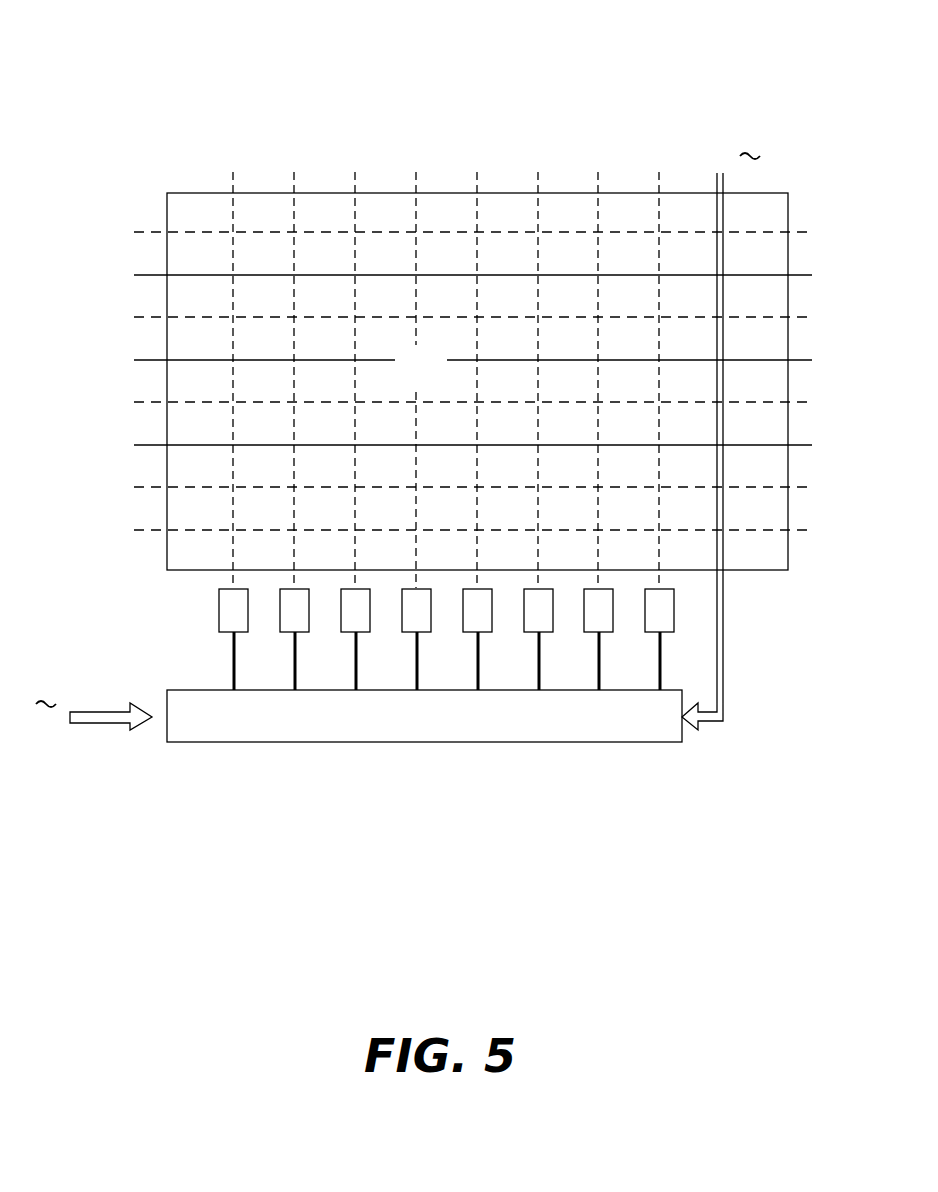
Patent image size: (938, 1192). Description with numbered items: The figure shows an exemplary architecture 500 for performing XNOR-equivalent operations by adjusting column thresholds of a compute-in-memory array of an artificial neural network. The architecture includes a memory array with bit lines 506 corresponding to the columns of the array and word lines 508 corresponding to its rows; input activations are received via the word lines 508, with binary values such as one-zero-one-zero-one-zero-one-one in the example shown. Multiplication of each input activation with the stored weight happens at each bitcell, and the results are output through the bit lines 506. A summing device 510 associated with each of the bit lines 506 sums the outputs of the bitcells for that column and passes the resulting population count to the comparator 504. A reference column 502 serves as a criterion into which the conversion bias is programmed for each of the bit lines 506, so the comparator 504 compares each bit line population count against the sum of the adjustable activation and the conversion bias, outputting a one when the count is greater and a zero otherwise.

The architecture 500 is at (212, 91).
The reference column 502 is at (716, 418).
The comparator 504 is at (423, 742).
The bit lines 506 is at (413, 208).
The word lines 508 is at (778, 235).
The summing device 510 is at (210, 588).